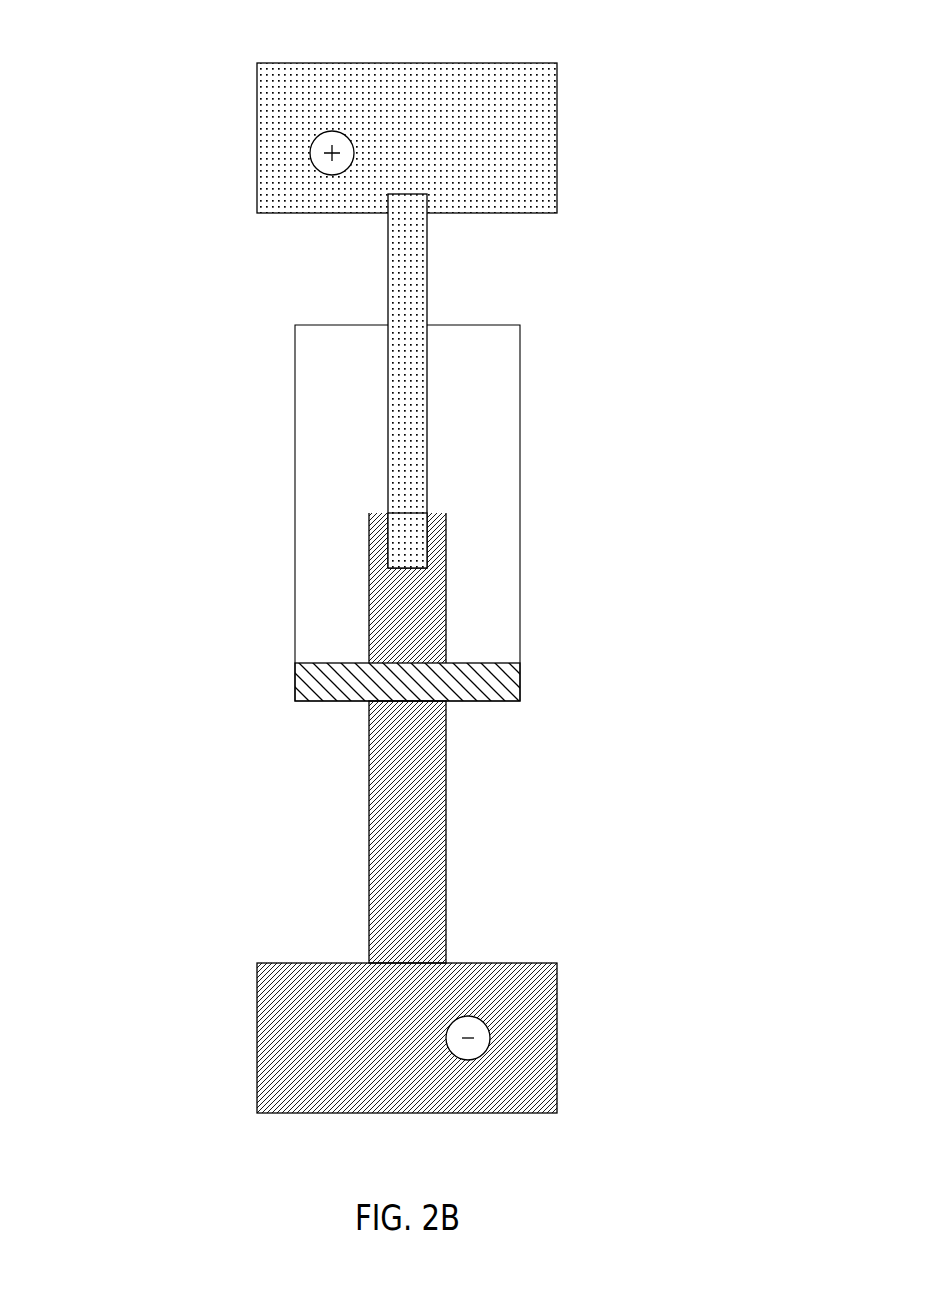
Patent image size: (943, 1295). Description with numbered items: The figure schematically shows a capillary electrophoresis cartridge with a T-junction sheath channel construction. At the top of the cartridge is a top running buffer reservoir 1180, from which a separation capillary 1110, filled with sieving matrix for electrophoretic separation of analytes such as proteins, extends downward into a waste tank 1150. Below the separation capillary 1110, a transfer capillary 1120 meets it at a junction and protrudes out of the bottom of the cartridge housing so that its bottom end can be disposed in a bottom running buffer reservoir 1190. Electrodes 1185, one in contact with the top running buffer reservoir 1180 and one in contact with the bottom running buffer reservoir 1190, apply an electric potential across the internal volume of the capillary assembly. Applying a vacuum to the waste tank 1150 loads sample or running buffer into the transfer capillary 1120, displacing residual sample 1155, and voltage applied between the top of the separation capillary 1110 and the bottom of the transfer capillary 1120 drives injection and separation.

The top running buffer reservoir 1180 is at (520, 137).
The electrodes 1185 is at (310, 152).
The separation capillary 1110 is at (407, 268).
The waste tank 1150 is at (295, 569).
The transfer capillary 1120 is at (446, 607).
The residual sample 1155 is at (323, 682).
The bottom running buffer reservoir 1190 is at (323, 1007).